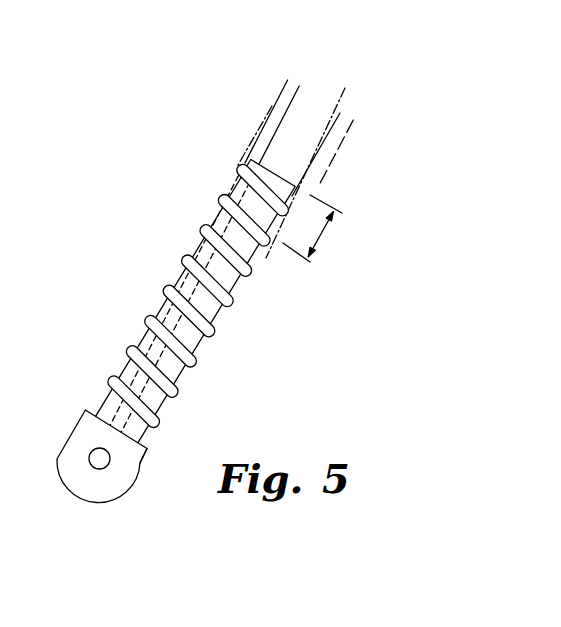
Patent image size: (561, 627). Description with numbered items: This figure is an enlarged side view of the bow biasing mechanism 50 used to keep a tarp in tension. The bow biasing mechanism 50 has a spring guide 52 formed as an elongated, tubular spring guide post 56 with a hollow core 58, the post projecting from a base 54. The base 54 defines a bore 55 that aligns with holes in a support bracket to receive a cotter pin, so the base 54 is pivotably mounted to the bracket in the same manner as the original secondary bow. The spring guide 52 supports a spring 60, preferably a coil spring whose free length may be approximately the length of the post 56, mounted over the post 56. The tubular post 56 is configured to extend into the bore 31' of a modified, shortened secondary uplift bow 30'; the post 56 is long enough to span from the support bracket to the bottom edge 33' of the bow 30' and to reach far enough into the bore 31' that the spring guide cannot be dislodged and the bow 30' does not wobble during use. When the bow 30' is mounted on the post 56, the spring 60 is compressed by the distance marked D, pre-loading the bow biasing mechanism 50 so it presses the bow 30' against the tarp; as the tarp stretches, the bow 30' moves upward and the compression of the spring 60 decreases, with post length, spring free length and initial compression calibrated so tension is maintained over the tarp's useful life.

The bow biasing mechanism 50 is at (217, 292).
The spring guide 52 is at (82, 417).
The base 54 is at (128, 458).
The bore 55 is at (98, 462).
The spring guide post 56 is at (232, 294).
The hollow core 58 is at (280, 170).
The spring 60 is at (166, 406).
The bottom edge 33' is at (195, 301).
The bore 31' is at (315, 152).
The secondary uplift bow 30' is at (344, 154).